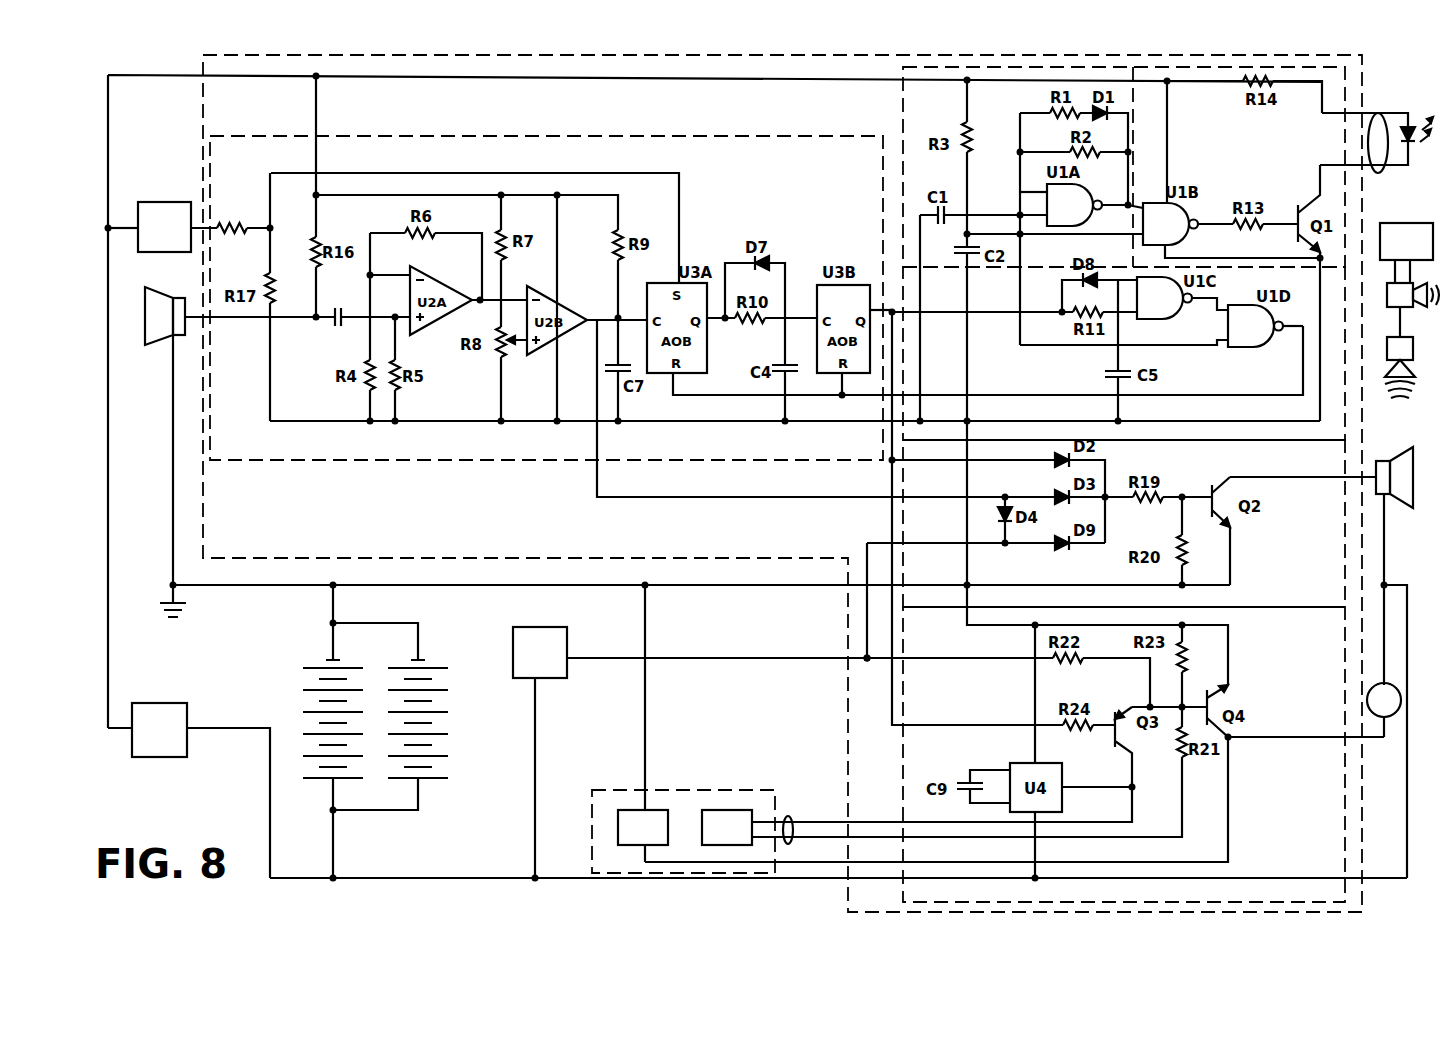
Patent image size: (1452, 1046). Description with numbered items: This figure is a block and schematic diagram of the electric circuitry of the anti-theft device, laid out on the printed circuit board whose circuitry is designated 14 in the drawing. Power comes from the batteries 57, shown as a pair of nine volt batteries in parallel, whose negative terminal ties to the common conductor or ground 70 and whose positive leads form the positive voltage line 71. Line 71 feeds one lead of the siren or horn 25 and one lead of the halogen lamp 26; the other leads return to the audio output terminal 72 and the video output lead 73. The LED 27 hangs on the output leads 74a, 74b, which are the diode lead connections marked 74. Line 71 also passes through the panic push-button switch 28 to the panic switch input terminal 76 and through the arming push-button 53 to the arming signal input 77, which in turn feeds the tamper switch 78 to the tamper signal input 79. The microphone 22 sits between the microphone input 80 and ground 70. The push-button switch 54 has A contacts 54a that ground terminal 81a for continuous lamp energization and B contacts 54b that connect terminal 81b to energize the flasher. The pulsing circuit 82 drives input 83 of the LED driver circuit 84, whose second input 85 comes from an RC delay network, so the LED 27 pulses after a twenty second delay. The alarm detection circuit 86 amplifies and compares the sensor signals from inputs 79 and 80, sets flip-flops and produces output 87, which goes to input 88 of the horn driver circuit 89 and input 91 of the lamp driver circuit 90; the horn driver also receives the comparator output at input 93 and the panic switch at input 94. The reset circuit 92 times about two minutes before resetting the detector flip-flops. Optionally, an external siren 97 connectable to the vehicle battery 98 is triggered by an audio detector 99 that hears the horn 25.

The alarm circuit 14 is at (420, 537).
The microphone 22 is at (163, 292).
The siren or horn 25 is at (1388, 450).
The halogen lamp 26 is at (1367, 696).
The LED 27 is at (1422, 148).
The panic push-button switch 28 is at (536, 627).
The arming push-button 53 is at (158, 708).
The push-button switch 54 is at (602, 787).
The A contacts 54a is at (652, 810).
The B contacts 54b is at (732, 810).
The batteries 57 is at (374, 672).
The common conductor or ground 70 is at (298, 422).
The positive voltage line 71 is at (426, 878).
The audio output terminal 72 is at (1306, 474).
The video output lead 73 is at (1321, 736).
The light emitting diode 74 is at (1381, 127).
The output lead 74a is at (1384, 172).
The output lead 74b is at (1394, 124).
The panic switch input terminal 76 is at (734, 656).
The arming signal input 77 is at (179, 78).
The tamper switch 78 is at (162, 200).
The tamper signal input 79 is at (208, 226).
The microphone input 80 is at (218, 318).
The terminal 81a is at (806, 838).
The terminal 81b is at (789, 814).
The pulsing circuit 82 is at (900, 120).
The input 83 is at (1146, 204).
The LED driver circuit 84 is at (1246, 168).
The second input 85 is at (1126, 236).
The alarm detection circuit 86 is at (812, 195).
The output 87 is at (900, 314).
The input 88 is at (922, 462).
The horn driver circuit 89 is at (1292, 605).
The lamp driver circuit 90 is at (1285, 873).
The input 91 is at (894, 726).
The reset circuit 92 is at (1000, 390).
The input 93 is at (922, 500).
The input 94 is at (922, 545).
The external siren 97 is at (1412, 306).
The battery 98 is at (1413, 241).
The audio detector 99 is at (1414, 374).